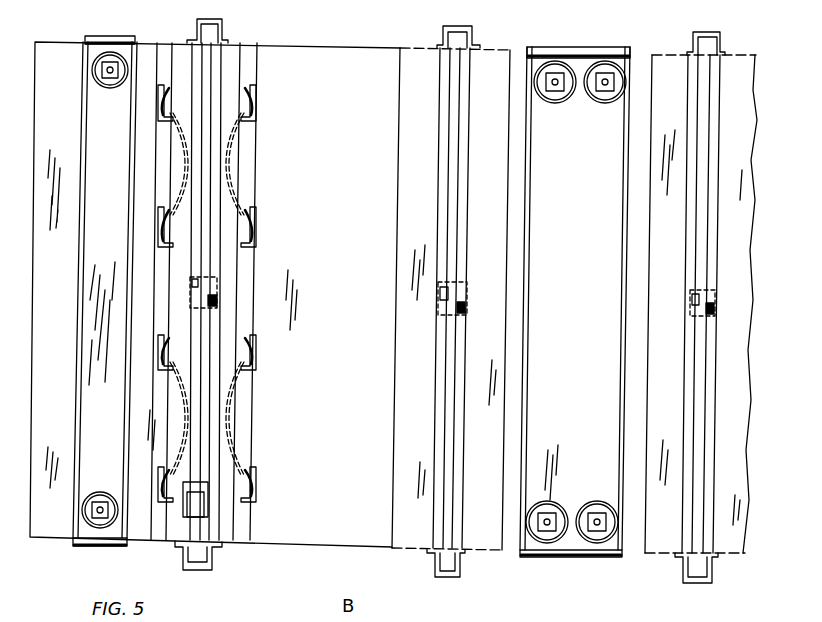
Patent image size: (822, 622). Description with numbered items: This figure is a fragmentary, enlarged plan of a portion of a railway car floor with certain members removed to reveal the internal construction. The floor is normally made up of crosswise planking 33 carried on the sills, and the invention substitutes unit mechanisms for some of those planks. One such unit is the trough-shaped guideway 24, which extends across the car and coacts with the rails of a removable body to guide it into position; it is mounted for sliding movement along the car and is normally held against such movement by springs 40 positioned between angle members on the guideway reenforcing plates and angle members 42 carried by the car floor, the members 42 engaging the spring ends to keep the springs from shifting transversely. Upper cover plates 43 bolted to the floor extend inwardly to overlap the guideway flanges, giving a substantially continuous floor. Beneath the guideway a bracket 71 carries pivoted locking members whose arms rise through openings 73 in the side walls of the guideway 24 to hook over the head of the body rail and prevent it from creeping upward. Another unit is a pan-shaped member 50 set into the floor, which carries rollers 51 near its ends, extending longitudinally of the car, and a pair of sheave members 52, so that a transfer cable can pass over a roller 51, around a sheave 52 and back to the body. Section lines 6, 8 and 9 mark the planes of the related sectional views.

The guideway 24 is at (200, 449).
The planking 33 is at (339, 150).
The springs 40 is at (158, 208).
The angle members 42 is at (157, 343).
The upper cover plates 43 is at (541, 457).
The pan-shaped member 50 is at (309, 294).
The rollers 51 is at (100, 37).
The sheave members 52 is at (110, 90).
The bracket 71 is at (215, 277).
The openings 73 is at (217, 303).
The section line 6— 6 is at (130, 417).
The section line 8— 8 is at (582, 22).
The section line 9— 9 is at (210, 0).